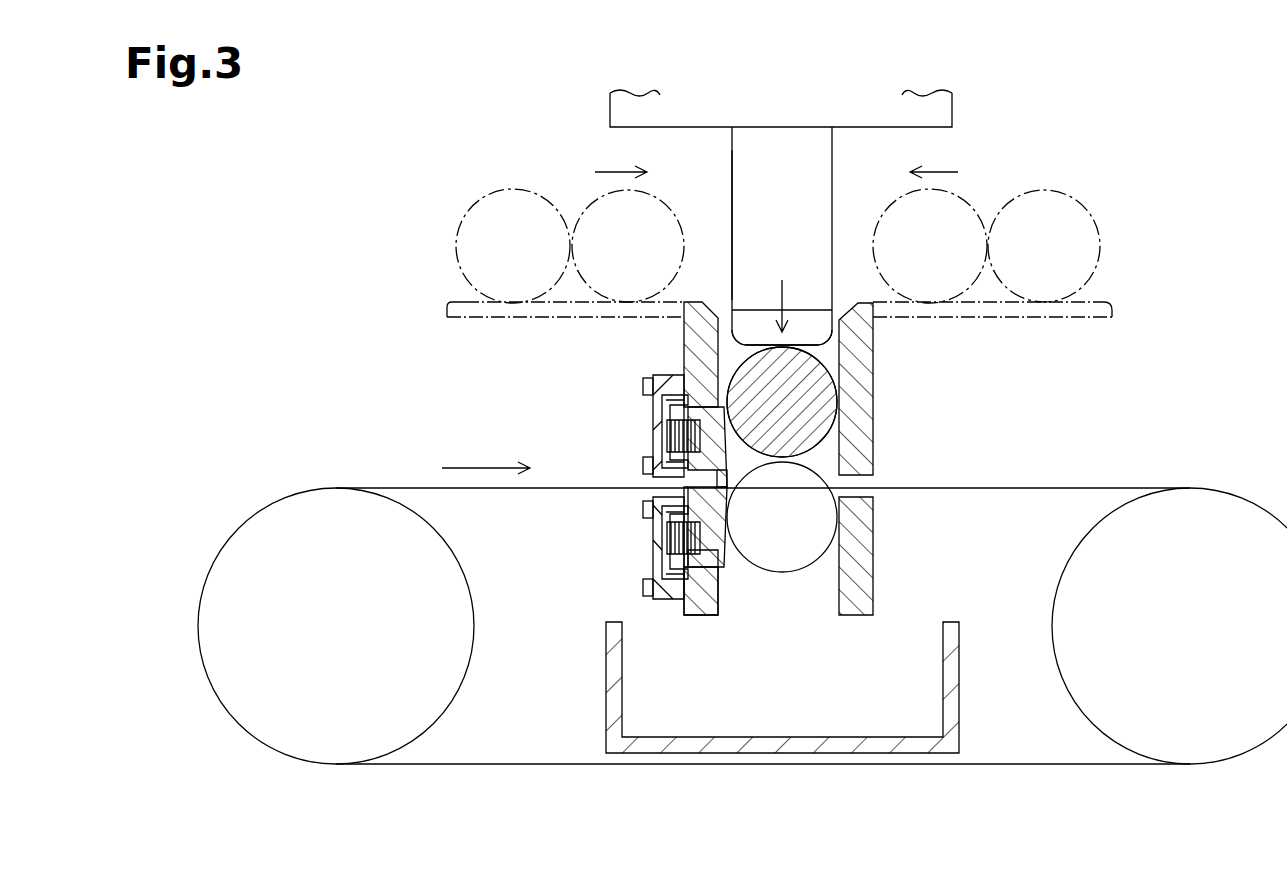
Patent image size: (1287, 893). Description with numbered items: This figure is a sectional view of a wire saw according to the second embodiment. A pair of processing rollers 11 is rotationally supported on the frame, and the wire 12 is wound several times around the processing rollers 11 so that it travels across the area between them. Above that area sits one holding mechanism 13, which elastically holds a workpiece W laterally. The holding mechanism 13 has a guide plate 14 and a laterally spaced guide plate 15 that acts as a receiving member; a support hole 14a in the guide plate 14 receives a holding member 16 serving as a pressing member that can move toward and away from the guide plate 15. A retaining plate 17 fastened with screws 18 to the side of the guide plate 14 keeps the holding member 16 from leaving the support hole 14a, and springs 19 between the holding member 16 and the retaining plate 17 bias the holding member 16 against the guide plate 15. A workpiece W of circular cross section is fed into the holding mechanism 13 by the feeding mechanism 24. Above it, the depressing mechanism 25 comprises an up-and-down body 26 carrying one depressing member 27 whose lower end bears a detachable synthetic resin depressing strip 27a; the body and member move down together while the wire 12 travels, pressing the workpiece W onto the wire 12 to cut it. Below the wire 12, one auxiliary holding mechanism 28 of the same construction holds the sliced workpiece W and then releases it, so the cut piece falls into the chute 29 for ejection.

The processing roller 11 is at (335, 488).
The wire 12 is at (413, 486).
The holding mechanism 13 is at (762, 450).
The guide plate 14 is at (684, 340).
The support hole 14a is at (727, 488).
The guide plate 15 is at (873, 355).
The holding member 16 is at (664, 404).
The retaining plate 17 is at (658, 376).
The screws 18 is at (643, 388).
The spring 19 is at (667, 435).
The feeding mechanism 24 is at (453, 300).
The depressing mechanism 25 is at (719, 160).
The up-and-down body 26 is at (868, 127).
The depressing member 27 is at (832, 192).
The depressing strip 27a is at (826, 312).
The auxiliary holding mechanism 28 is at (738, 622).
The chute 29 is at (606, 677).
The workpiece W is at (513, 188).